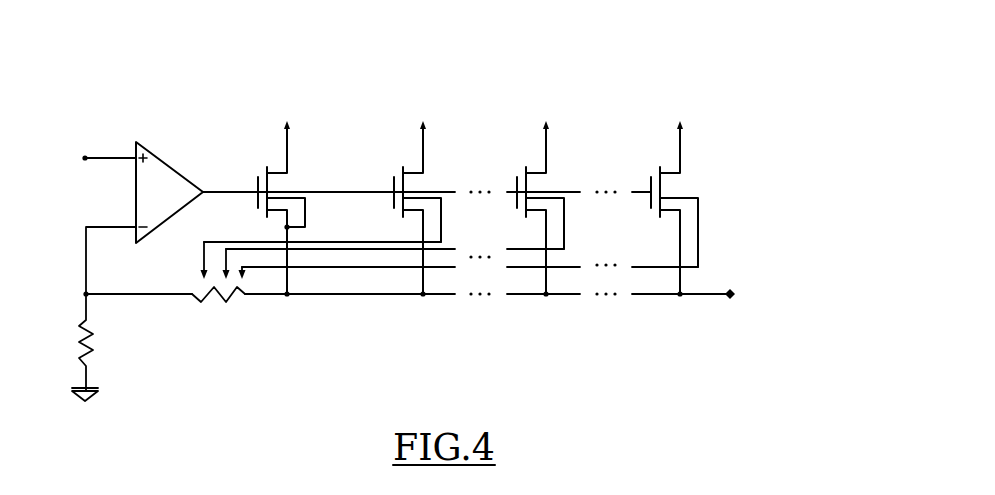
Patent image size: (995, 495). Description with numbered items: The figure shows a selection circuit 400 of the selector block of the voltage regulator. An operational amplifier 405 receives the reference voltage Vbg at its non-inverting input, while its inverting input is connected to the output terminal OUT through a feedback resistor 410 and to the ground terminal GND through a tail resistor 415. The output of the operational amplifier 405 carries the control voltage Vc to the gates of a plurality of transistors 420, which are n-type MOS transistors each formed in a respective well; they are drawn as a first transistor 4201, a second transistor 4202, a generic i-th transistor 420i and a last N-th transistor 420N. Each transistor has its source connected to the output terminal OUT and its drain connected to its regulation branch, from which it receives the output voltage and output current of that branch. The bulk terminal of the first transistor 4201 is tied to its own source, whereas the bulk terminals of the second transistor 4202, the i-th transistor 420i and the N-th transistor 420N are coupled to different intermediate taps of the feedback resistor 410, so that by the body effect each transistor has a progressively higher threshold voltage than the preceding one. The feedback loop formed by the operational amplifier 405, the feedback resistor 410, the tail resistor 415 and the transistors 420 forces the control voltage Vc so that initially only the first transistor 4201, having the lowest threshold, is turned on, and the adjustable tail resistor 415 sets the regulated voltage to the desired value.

The selection circuit 400 is at (750, 96).
The operational amplifier 405 is at (137, 148).
The feedback resistor 410 is at (223, 300).
The tail resistor 415 is at (93, 347).
The transistors 420 is at (449, 168).
The first transistor 4201 is at (259, 165).
The second transistor 4202 is at (392, 165).
The i-th transistor 420i is at (510, 165).
The N-th transistor 420N is at (640, 165).